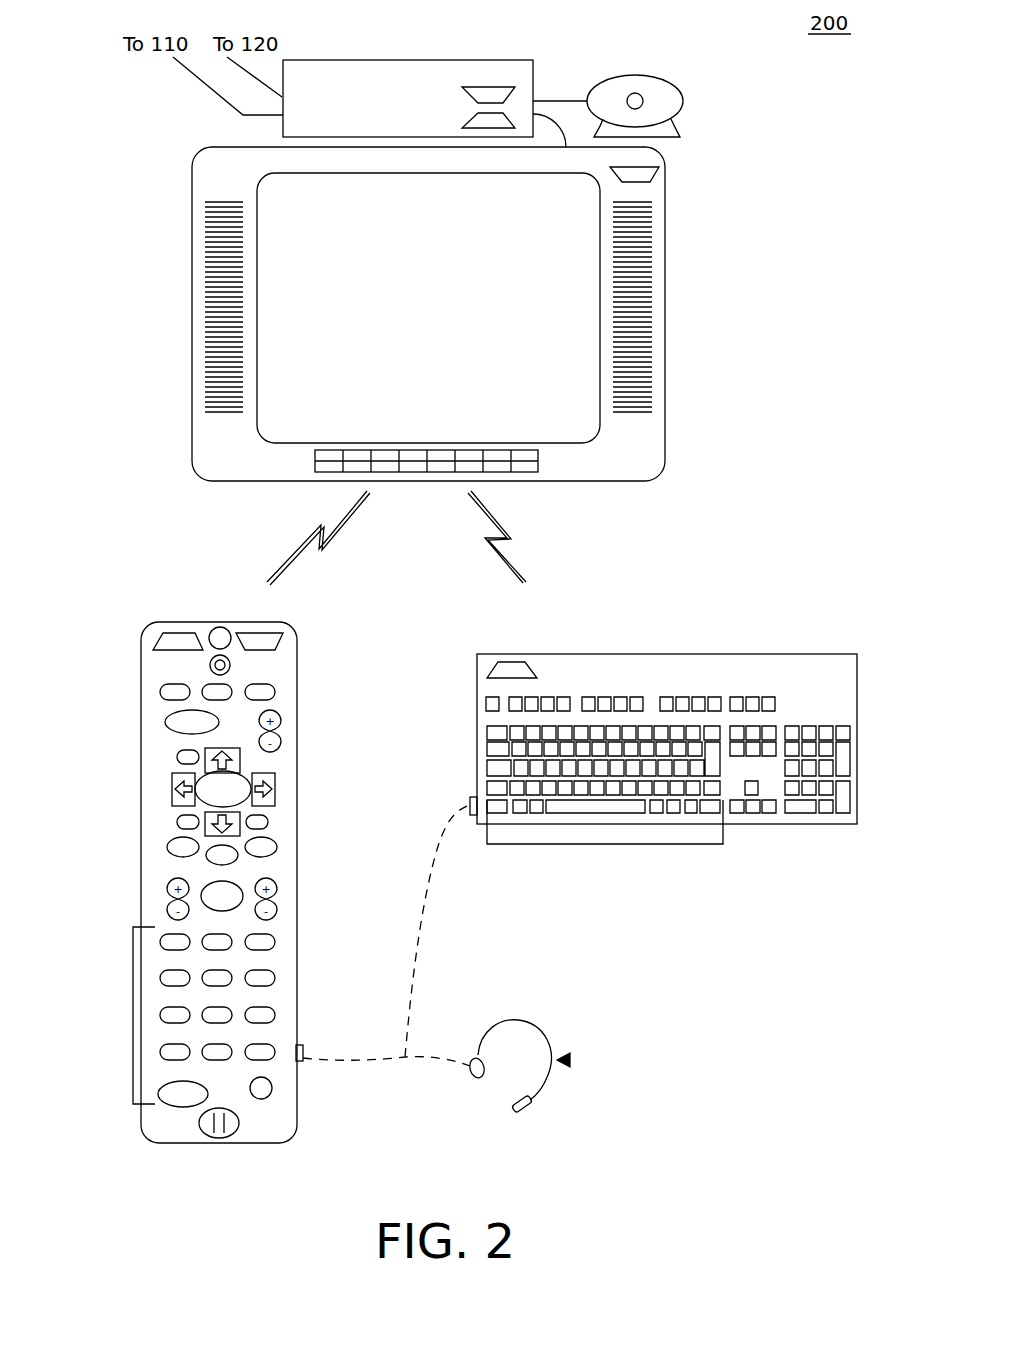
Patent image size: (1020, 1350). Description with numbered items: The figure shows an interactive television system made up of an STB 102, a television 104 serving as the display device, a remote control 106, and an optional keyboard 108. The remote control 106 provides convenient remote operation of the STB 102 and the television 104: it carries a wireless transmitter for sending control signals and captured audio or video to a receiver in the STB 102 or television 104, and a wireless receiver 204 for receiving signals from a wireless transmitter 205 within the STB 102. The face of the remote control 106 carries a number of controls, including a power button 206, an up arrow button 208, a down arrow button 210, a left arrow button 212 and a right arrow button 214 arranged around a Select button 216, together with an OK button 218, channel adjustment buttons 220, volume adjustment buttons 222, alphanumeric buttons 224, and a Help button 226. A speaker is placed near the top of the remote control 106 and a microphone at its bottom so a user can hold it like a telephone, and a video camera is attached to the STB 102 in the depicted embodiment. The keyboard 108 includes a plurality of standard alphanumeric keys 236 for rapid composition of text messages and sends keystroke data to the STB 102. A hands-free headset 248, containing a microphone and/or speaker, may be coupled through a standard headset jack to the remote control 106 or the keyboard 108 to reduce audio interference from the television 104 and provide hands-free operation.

The STB 102 is at (424, 103).
The television 104 is at (428, 314).
The remote control 106 is at (219, 875).
The keyboard 108 is at (642, 752).
The wireless receiver 204 is at (322, 636).
The wireless transmitter 205 is at (508, 122).
The power button 206 is at (160, 688).
The up arrow button 208 is at (253, 757).
The down arrow button 210 is at (200, 830).
The left arrow button 212 is at (172, 790).
The right arrow button 214 is at (290, 789).
The Select button 216 is at (237, 775).
The OK button 218 is at (225, 884).
The channel adjustment buttons 220 is at (165, 905).
The channel control 222 is at (275, 905).
The alphanumeric buttons 224 is at (133, 1015).
The Help button 226 is at (175, 1107).
The alphanumeric keys 236 is at (605, 845).
The hands-free headset 248 is at (521, 1075).